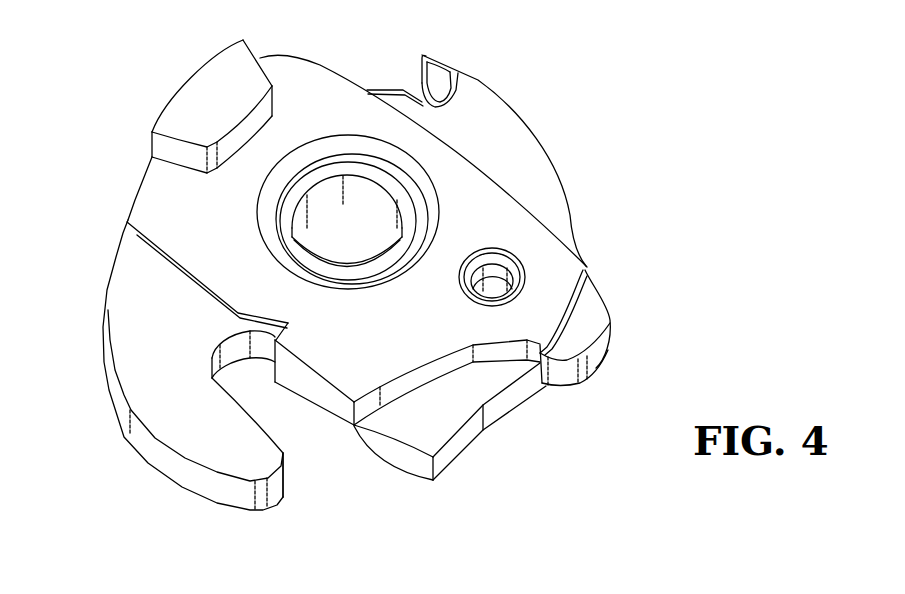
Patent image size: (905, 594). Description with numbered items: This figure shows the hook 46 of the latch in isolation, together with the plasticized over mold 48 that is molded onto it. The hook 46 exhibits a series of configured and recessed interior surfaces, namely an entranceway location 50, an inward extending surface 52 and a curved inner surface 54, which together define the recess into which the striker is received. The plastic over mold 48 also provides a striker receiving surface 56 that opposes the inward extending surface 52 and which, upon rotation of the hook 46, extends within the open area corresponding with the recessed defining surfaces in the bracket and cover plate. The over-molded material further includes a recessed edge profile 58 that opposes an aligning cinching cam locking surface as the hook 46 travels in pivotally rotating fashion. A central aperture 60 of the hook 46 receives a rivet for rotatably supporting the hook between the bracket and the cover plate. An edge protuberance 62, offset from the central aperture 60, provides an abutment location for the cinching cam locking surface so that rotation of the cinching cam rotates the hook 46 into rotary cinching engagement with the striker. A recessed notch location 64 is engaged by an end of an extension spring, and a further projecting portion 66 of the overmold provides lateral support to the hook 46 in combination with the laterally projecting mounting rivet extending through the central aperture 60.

The hook 46 is at (142, 300).
The plasticized over mold 48 is at (457, 190).
The entranceway location 50 is at (290, 463).
The inward extending surface 52 is at (268, 432).
The curved inner surface 54 is at (232, 345).
The striker receiving surface 56 is at (335, 415).
The recessed edge profile 58 is at (490, 355).
The central aperture 60 is at (380, 197).
The edge protuberance 62 is at (595, 358).
The recessed notch location 64 is at (428, 80).
The projecting portion 66 is at (195, 93).